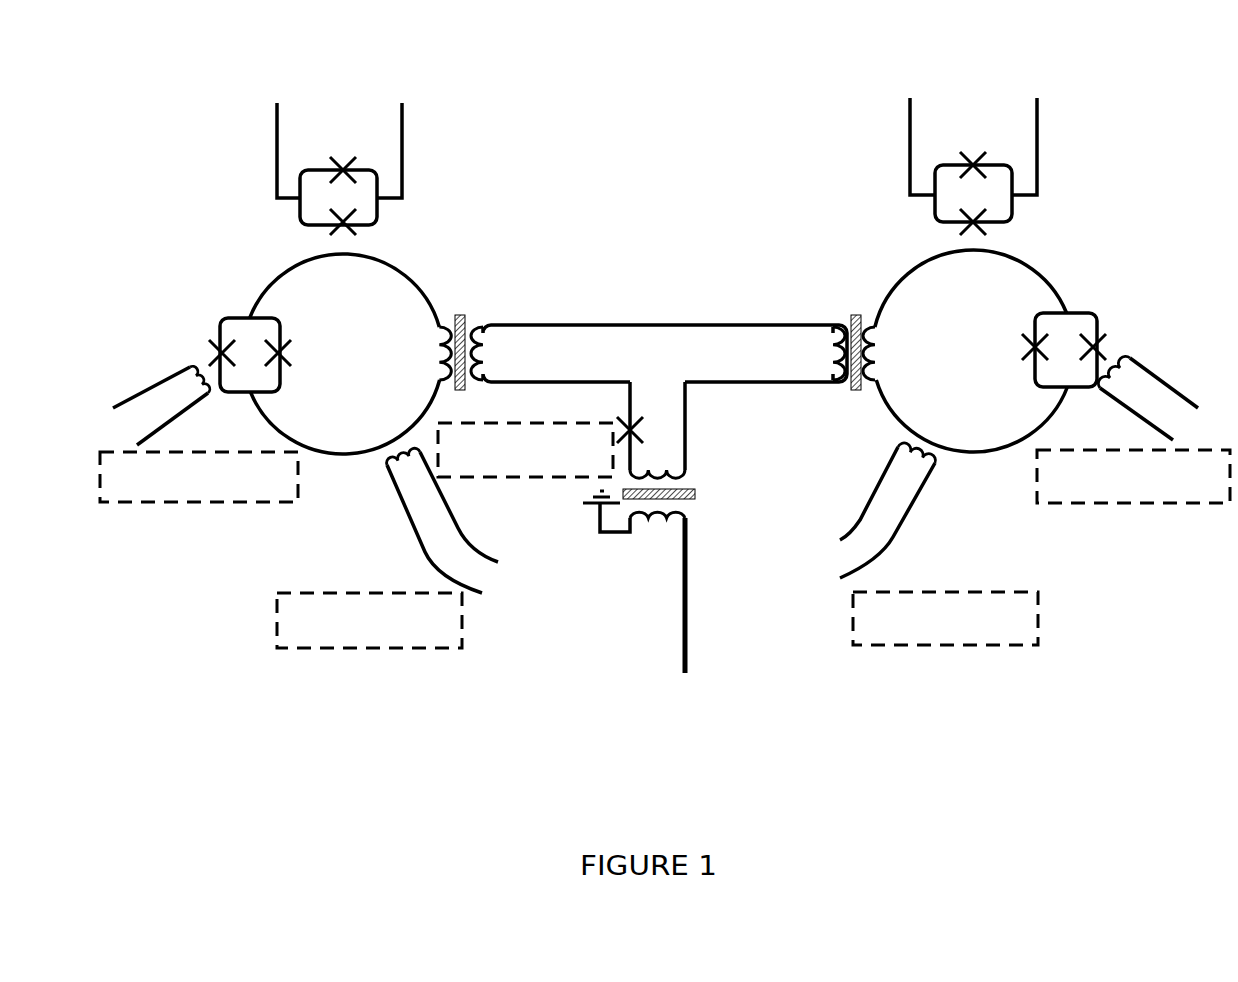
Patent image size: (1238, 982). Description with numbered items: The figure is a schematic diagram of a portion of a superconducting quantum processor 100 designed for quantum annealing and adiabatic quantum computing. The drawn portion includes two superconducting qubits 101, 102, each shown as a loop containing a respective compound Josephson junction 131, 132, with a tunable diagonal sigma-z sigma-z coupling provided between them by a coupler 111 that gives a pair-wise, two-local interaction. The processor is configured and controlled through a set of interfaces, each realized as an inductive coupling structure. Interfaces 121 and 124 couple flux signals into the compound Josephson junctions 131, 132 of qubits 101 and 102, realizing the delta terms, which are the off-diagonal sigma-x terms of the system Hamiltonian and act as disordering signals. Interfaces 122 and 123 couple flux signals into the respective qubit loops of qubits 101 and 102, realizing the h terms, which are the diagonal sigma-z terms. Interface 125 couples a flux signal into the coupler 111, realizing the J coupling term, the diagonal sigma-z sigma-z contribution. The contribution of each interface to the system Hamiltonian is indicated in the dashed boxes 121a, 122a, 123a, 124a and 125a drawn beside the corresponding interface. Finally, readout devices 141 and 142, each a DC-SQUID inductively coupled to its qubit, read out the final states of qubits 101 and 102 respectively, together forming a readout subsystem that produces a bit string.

The superconducting quantum processor 100 is at (207, 126).
The superconducting qubit 101 is at (288, 292).
The superconducting qubit 102 is at (1040, 293).
The coupler 111 is at (663, 342).
The interface 121 is at (190, 358).
The box 121a is at (220, 503).
The interface 122 is at (395, 472).
The box 122a is at (385, 650).
The interface 123 is at (930, 467).
The box 123a is at (912, 647).
The interface 124 is at (1125, 356).
The box 124a is at (1100, 505).
The interface 125 is at (658, 520).
The box 125a is at (562, 478).
The compound Josephson junction 131 is at (284, 350).
The compound Josephson junction 132 is at (1030, 350).
The readout device 141 is at (343, 165).
The readout device 142 is at (971, 160).